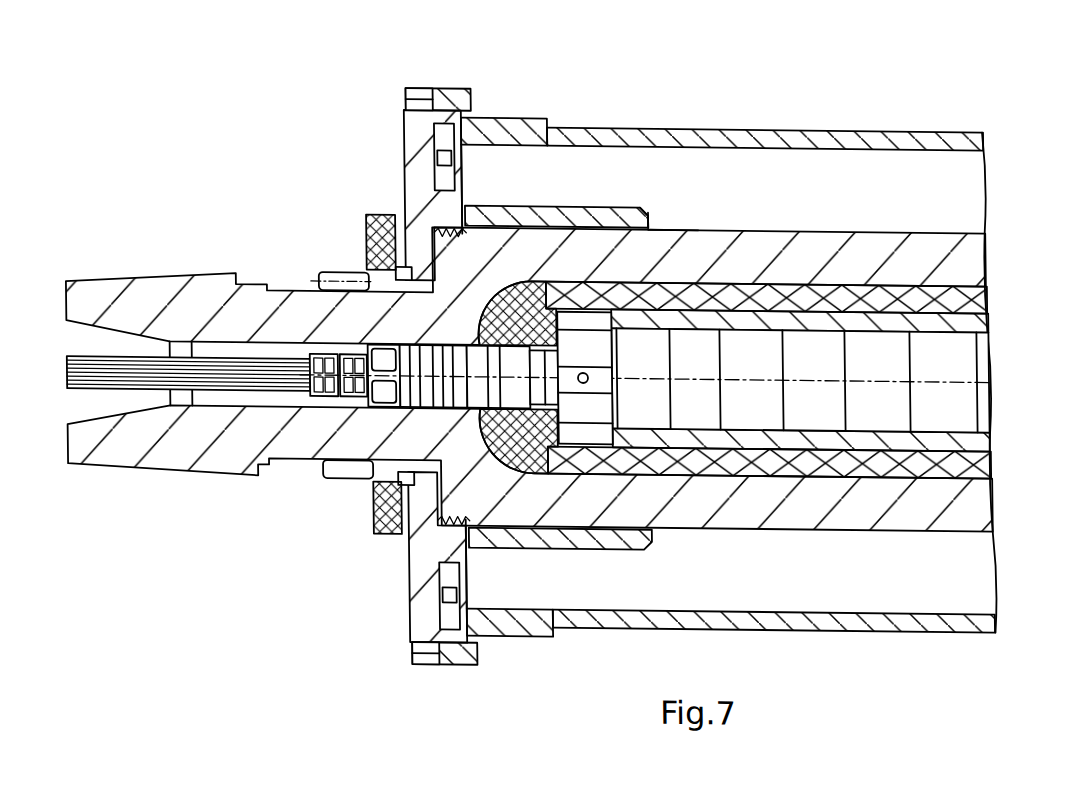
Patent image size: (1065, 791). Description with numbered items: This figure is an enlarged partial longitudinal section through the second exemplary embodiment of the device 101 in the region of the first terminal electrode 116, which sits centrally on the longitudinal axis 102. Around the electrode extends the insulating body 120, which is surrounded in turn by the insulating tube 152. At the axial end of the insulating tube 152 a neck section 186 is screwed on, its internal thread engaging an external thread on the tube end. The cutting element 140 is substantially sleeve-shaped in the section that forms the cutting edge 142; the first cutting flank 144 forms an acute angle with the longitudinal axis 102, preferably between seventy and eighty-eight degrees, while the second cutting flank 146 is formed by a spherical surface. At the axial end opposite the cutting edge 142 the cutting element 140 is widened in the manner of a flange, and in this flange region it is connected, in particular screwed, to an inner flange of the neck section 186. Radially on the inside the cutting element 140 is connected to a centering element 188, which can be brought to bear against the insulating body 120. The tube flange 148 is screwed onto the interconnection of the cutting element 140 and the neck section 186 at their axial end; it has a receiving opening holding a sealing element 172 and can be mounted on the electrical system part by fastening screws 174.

The device 101 is at (484, 690).
The longitudinal axis 102 is at (823, 381).
The first terminal electrode 116 is at (594, 407).
The insulating body 120 is at (889, 247).
The cutting element 140 is at (562, 207).
The cutting edge 142 is at (660, 226).
The first cutting flank 144 is at (650, 213).
The second cutting flank 146 is at (648, 225).
The tube flange 148 is at (423, 124).
The insulating tube 152 is at (843, 128).
The sealing element 172 is at (370, 232).
The fastening screws 174 is at (339, 473).
The neck section 186 is at (510, 119).
The centering element 188 is at (428, 272).